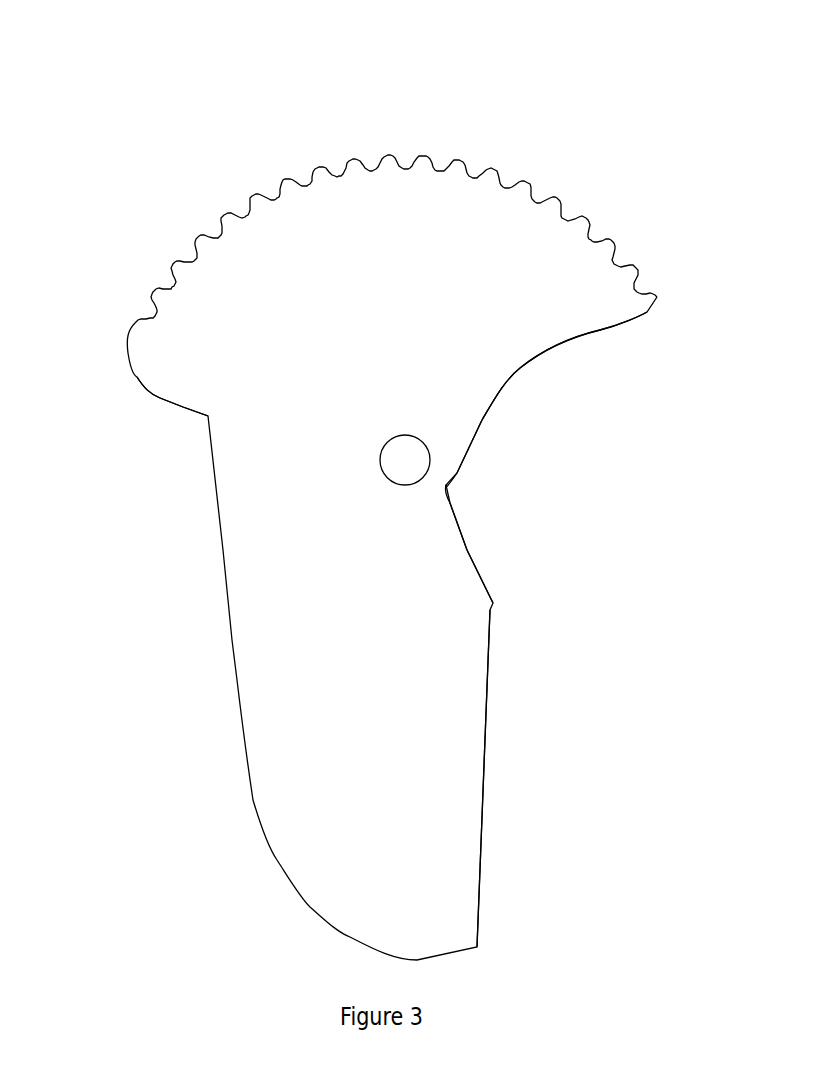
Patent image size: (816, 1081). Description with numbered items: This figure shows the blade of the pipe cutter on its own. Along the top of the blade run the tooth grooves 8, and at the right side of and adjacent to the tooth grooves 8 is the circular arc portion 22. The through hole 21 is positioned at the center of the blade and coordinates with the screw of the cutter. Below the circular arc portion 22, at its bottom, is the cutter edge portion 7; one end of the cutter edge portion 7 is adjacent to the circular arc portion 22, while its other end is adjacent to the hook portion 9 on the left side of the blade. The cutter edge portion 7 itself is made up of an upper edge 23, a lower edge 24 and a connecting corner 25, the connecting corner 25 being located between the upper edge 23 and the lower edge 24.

The cutter edge portion 7 is at (463, 642).
The tooth grooves 8 is at (357, 160).
The hook portion 9 is at (207, 420).
The through hole 21 is at (405, 460).
The circular arc portion 22 is at (520, 368).
The upper edge 23 is at (470, 552).
The lower edge 24 is at (477, 873).
The connecting corner 25 is at (493, 603).